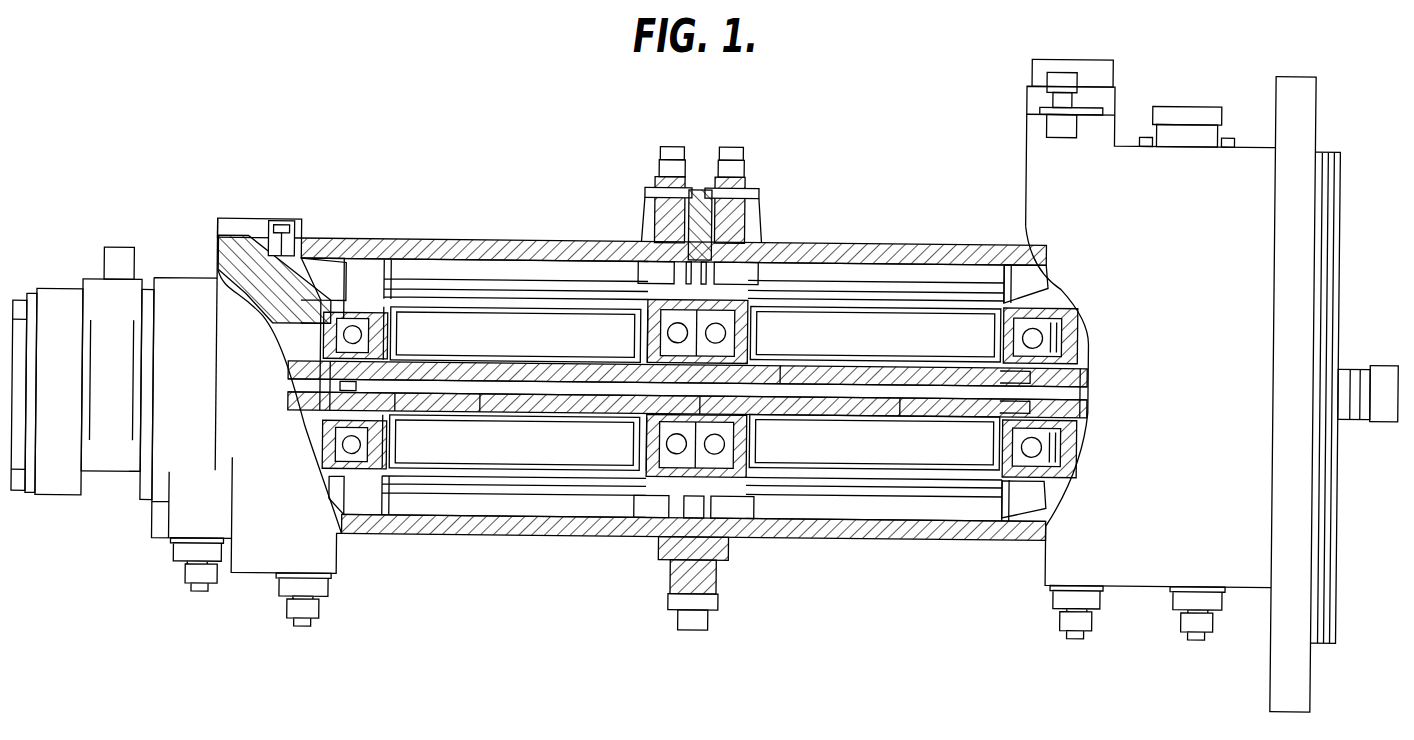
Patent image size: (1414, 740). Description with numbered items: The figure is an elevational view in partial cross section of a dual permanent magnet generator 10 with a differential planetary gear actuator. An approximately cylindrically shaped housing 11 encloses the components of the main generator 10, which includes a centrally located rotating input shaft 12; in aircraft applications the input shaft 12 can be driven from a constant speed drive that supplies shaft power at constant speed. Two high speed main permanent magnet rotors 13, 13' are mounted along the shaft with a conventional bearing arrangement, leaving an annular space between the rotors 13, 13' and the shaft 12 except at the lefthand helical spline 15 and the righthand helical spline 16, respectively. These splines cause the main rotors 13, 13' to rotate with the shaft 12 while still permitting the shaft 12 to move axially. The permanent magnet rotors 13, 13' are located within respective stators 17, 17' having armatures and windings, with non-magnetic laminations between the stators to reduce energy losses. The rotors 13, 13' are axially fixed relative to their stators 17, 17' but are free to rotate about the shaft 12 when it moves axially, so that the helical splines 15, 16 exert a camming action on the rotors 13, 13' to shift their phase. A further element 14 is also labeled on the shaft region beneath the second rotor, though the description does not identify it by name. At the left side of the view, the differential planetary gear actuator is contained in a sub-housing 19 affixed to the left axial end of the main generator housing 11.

The dual permanent magnet generator 10 is at (506, 630).
The housing 11 is at (399, 244).
The input shaft 12 is at (1092, 378).
The main permanent magnet rotor 13 is at (515, 389).
The main permanent magnet rotor 13' is at (875, 388).
The second rotor shaft portion 14 is at (816, 408).
The lefthand helical spline 15 is at (414, 403).
The righthand helical spline 16 is at (986, 402).
The stator 17 is at (474, 352).
The stator 17' is at (897, 354).
The sub-housing 19 is at (66, 294).